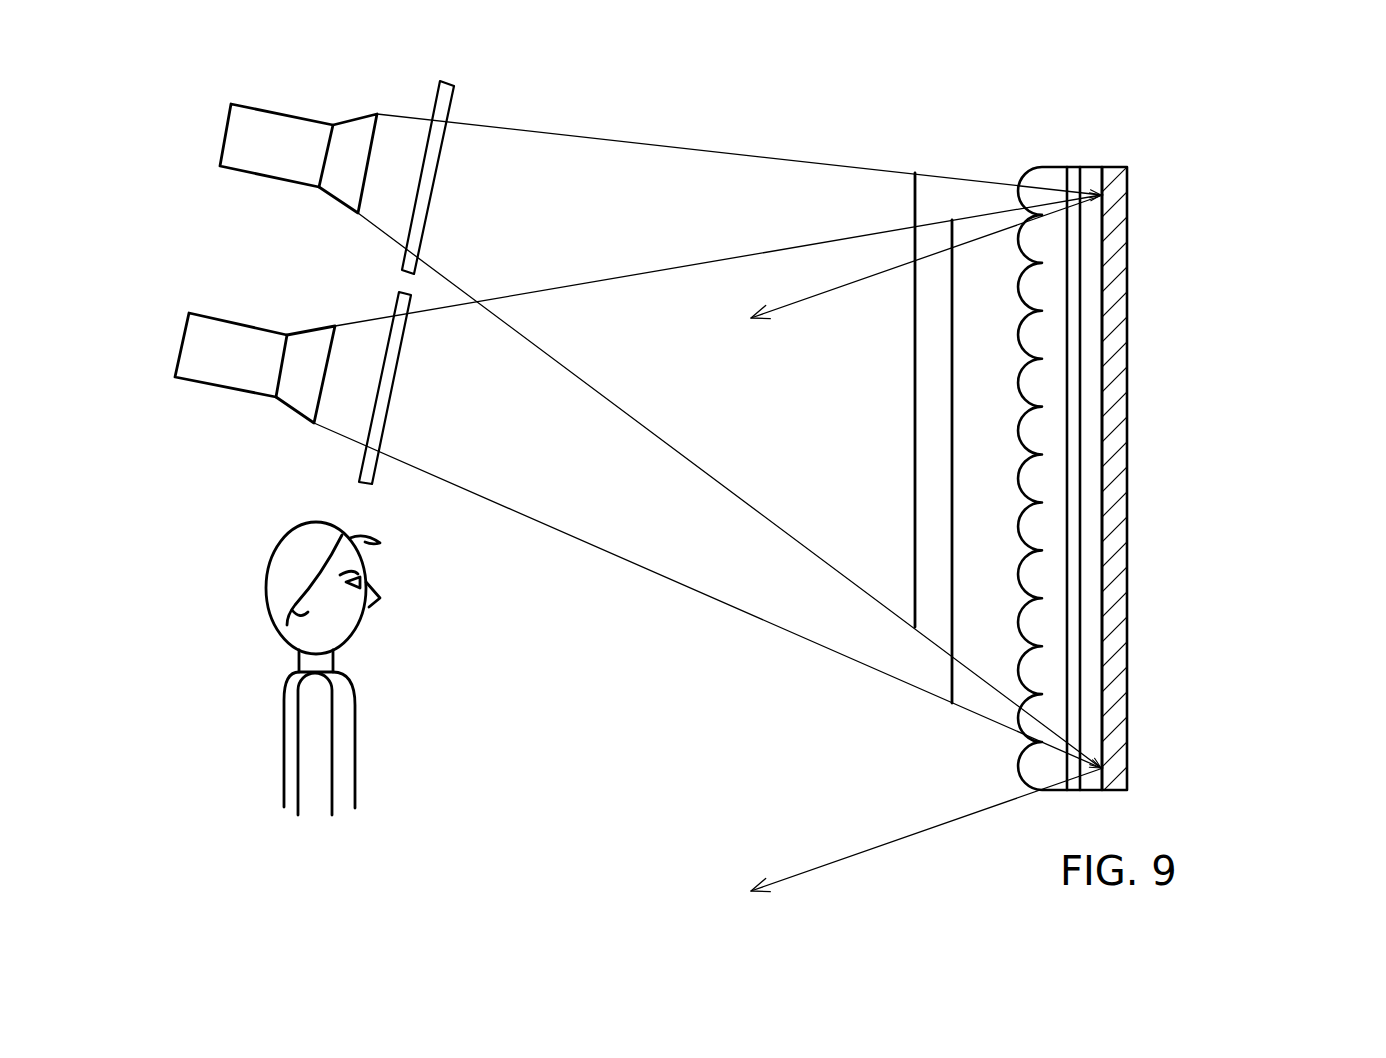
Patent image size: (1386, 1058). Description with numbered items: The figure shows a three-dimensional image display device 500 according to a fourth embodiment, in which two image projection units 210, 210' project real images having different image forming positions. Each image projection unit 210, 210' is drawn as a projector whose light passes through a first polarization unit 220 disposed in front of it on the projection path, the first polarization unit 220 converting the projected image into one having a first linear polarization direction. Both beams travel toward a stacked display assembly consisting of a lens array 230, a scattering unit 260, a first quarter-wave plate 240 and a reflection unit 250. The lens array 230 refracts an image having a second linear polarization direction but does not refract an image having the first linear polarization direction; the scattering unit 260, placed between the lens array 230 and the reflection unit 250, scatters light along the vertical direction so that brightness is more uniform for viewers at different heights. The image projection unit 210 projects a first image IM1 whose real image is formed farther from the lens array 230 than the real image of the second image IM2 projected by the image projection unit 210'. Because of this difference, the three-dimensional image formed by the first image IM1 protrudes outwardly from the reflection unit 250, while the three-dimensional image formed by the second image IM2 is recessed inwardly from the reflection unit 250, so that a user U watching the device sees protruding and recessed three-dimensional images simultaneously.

The image projection unit 210 is at (271, 137).
The image projection unit 210' is at (228, 346).
The first polarization unit 220 is at (443, 82).
The lens array 230 is at (1042, 177).
The first quarter-wave plate 240 is at (1093, 177).
The reflection unit 250 is at (1120, 173).
The scattering unit 260 is at (1072, 177).
The 3D image display device 500 is at (1213, 170).
The first image IM1 is at (915, 170).
The second image IM2 is at (955, 216).
The user U is at (283, 548).